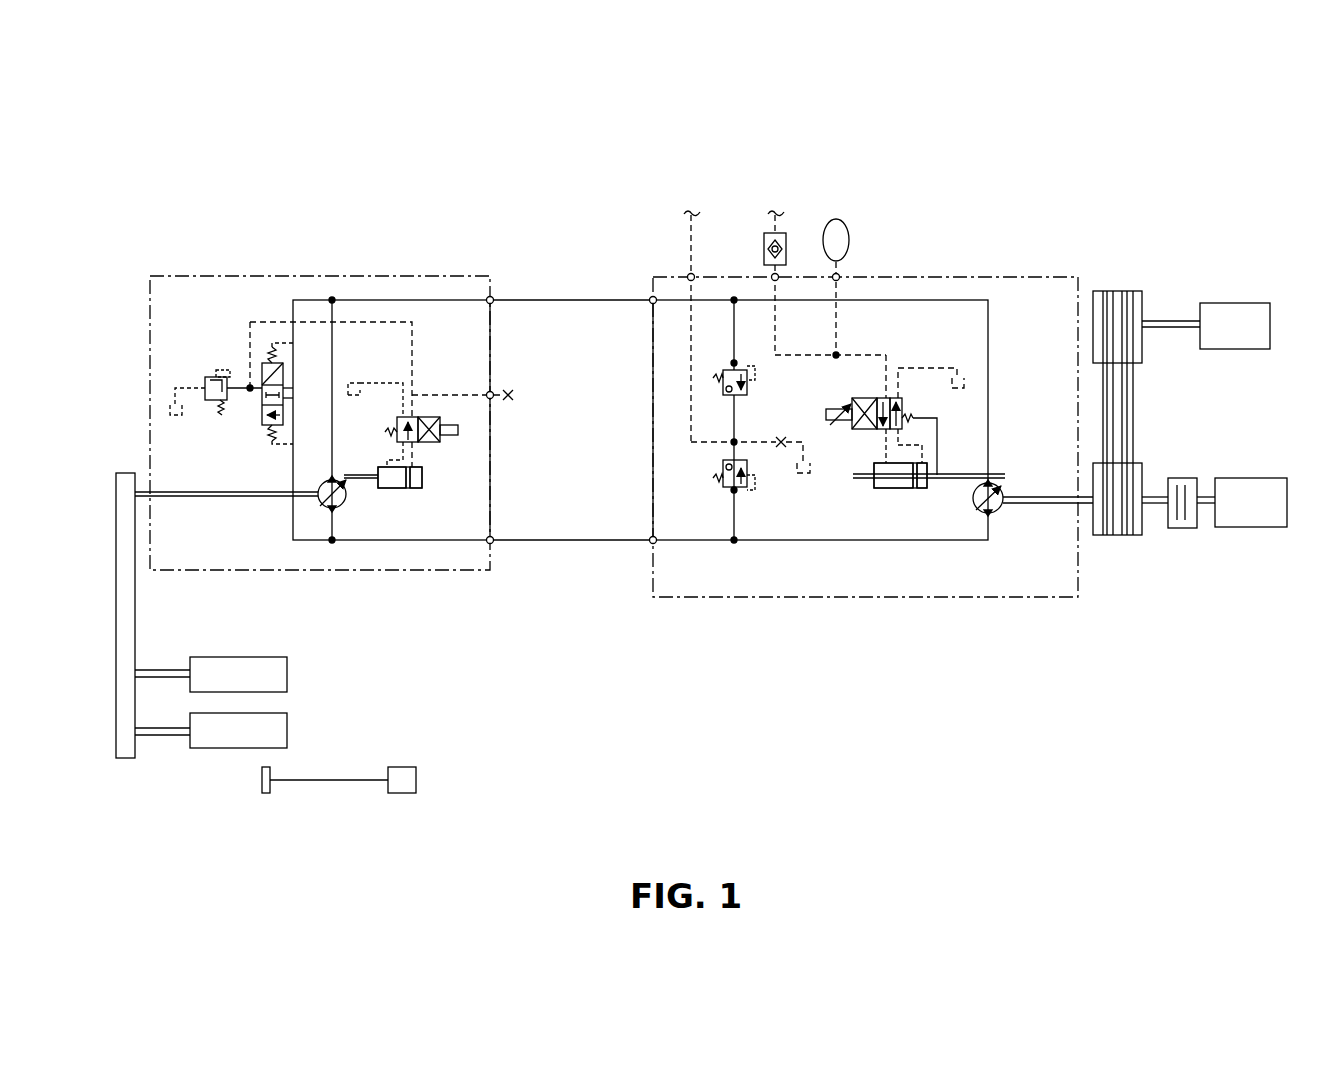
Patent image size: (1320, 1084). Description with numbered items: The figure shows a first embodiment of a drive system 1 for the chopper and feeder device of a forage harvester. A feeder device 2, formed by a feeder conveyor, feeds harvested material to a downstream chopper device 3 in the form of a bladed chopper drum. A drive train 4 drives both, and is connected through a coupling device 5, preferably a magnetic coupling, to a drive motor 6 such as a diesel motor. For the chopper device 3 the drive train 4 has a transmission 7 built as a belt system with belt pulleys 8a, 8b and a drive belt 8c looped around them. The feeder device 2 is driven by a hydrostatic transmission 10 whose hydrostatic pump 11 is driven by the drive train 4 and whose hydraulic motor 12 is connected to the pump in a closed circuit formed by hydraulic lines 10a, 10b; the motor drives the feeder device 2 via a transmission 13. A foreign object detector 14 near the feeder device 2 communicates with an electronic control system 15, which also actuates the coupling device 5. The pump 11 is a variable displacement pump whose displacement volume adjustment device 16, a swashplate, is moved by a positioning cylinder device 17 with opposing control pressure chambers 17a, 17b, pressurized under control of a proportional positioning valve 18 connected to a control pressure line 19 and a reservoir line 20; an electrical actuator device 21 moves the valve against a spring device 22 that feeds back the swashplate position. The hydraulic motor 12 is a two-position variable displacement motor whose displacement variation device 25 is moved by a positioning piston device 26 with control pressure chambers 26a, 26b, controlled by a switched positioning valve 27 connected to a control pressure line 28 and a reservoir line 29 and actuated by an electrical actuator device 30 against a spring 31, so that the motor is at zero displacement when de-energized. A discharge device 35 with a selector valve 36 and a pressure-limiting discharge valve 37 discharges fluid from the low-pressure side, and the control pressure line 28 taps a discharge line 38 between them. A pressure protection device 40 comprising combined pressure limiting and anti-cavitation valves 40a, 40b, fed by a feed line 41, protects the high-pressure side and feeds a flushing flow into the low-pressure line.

The drive system 1 is at (1064, 184).
The feeder device 2 is at (280, 733).
The chopper device 3 is at (1235, 317).
The drive train 4 is at (1156, 453).
The coupling device 5 is at (1182, 528).
The drive motor 6 is at (1247, 513).
The transmission 7 is at (1156, 417).
The belt pulley 8a is at (1138, 470).
The belt pulley 8b is at (1137, 300).
The drive belt 8c is at (1130, 396).
The hydrostatic transmission 10 is at (628, 545).
The hydraulic line 10a is at (572, 298).
The hydraulic line 10b is at (573, 545).
The hydrostatic pump 11 is at (1033, 472).
The hydraulic motor 12 is at (338, 512).
The transmission 13 is at (127, 615).
The foreign object detector 14 is at (262, 782).
The electronic control system 15 is at (403, 770).
The displacement volume adjustment device 16 is at (1000, 486).
The positioning cylinder device 17 is at (911, 557).
The control pressure chamber 17a is at (893, 490).
The control pressure chamber 17b is at (920, 490).
The positioning valve 18 is at (890, 419).
The control pressure line 19 is at (788, 353).
The reservoir line 20 is at (922, 368).
The electrical actuator device 21 is at (828, 410).
The spring device 22 is at (910, 417).
The displacement variation device 25 is at (320, 504).
The positioning piston device 26 is at (451, 553).
The control pressure chamber 26a is at (417, 475).
The control pressure chamber 26b is at (395, 488).
The positioning valve 27 is at (452, 383).
The control pressure line 28 is at (377, 322).
The reservoir line 29 is at (358, 383).
The electrical actuator device 30 is at (458, 430).
The spring 31 is at (391, 432).
The discharge device 35 is at (230, 333).
The selector valve 36 is at (255, 362).
The discharge valve 37 is at (215, 400).
The discharge line 38 is at (240, 392).
The pressure protection device 40 is at (673, 482).
The pressure limiting valve 40a is at (726, 363).
The pressure limiting valve 40b is at (720, 462).
The feed line 41 is at (688, 235).